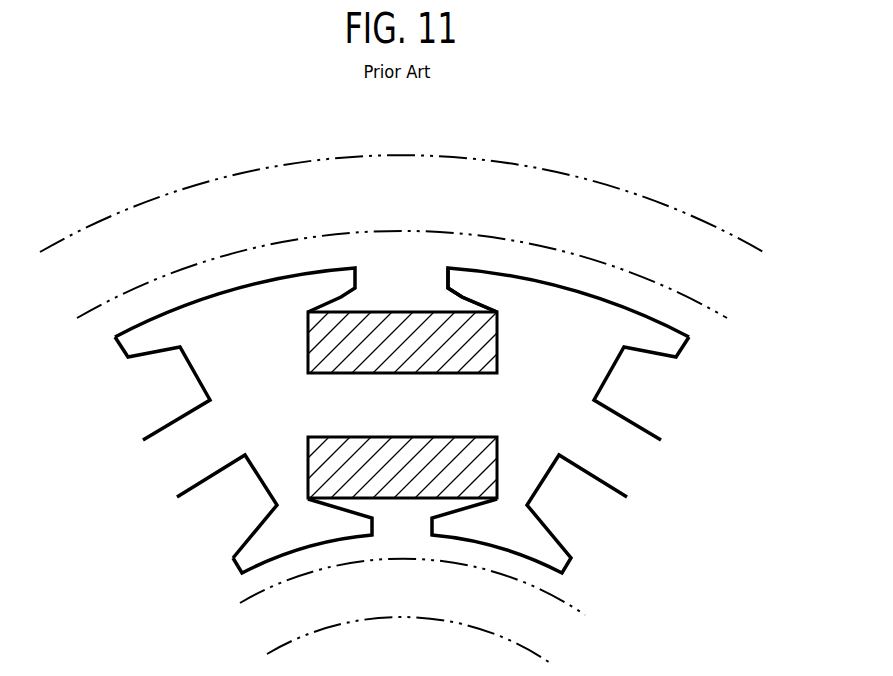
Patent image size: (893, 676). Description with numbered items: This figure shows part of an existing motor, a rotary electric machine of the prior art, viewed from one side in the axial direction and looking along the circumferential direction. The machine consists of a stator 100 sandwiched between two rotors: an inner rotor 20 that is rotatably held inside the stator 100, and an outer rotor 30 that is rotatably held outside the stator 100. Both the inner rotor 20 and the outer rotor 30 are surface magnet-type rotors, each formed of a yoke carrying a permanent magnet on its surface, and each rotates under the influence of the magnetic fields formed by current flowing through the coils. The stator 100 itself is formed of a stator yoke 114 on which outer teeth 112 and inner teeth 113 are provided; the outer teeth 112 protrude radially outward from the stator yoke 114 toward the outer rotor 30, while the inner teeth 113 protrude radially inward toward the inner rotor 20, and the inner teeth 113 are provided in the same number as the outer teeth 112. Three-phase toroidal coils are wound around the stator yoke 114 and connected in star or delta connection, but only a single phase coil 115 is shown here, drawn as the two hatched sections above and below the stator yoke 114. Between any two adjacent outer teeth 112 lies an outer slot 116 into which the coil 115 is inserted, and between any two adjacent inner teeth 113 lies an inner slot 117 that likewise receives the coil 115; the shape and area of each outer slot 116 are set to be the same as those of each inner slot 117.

The inner rotor 20 is at (572, 603).
The outer rotor 30 is at (660, 203).
The stator 100 is at (623, 443).
The outer teeth 112 is at (240, 355).
The inner teeth 113 is at (283, 473).
The stator yoke 114 is at (462, 403).
The coil 115 is at (383, 310).
The outer slot 116 is at (495, 346).
The inner slot 117 is at (497, 473).